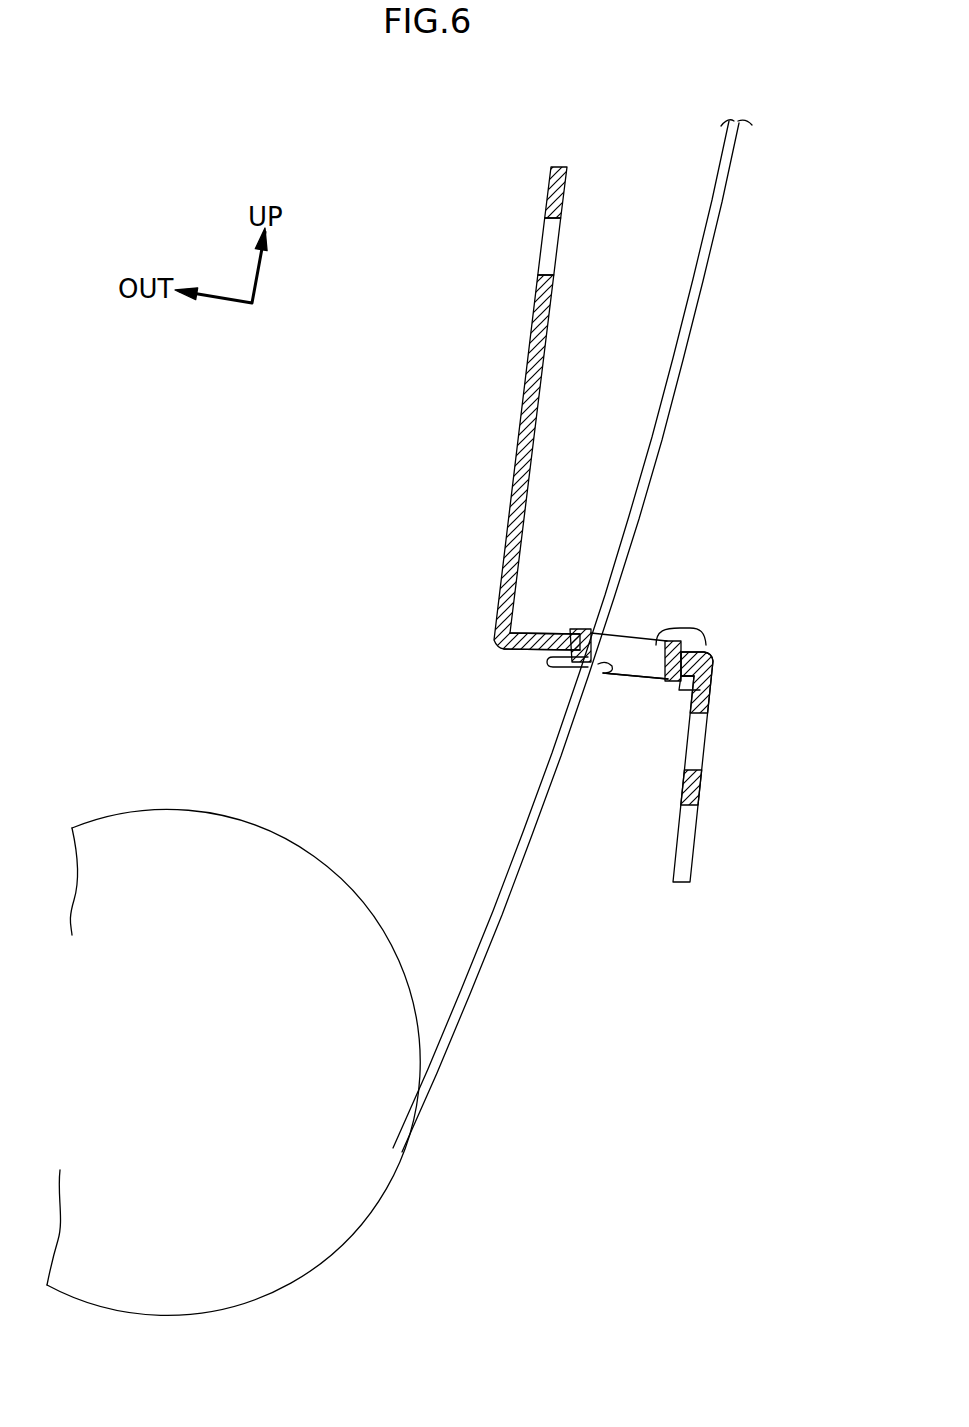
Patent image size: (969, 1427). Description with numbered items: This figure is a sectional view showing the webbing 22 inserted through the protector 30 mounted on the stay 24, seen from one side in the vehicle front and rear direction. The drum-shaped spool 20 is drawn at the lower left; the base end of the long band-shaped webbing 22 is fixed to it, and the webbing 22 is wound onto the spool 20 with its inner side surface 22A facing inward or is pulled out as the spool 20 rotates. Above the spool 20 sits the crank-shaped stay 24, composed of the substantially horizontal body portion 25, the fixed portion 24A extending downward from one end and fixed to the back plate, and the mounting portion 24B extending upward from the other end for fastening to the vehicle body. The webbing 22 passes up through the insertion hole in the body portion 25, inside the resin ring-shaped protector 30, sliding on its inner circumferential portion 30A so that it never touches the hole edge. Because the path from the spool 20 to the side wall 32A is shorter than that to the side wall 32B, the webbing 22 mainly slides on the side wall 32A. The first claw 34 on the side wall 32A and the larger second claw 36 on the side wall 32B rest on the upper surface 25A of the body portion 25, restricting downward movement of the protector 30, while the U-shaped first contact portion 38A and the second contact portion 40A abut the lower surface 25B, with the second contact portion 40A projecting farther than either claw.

The spool 20 is at (262, 830).
The webbing 22 is at (584, 636).
The inner side surface 22A is at (703, 236).
The stay 24 is at (601, 499).
The fixed portion 24A is at (712, 772).
The mounting portion 24B is at (567, 190).
The body portion 25 is at (496, 620).
The upper surface 25A is at (520, 632).
The lower surface 25B is at (530, 652).
The protector 30 is at (632, 636).
The inner circumferential portion 30A is at (648, 680).
The side wall 32A is at (592, 668).
The side wall 32B is at (665, 638).
The first claw 34 is at (580, 630).
The second claw 36 is at (714, 657).
The first contact portion 38A is at (684, 685).
The second contact portion 40A is at (552, 664).